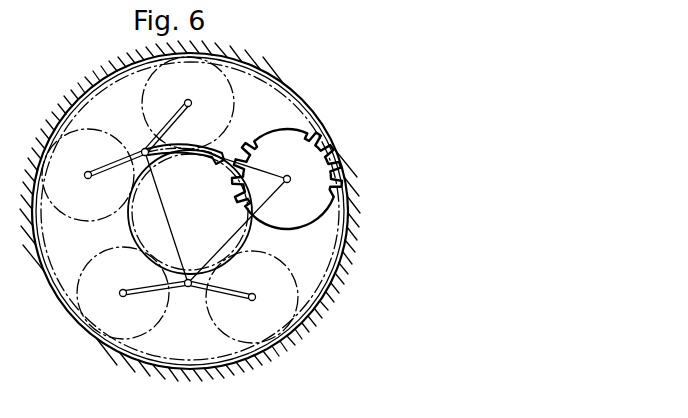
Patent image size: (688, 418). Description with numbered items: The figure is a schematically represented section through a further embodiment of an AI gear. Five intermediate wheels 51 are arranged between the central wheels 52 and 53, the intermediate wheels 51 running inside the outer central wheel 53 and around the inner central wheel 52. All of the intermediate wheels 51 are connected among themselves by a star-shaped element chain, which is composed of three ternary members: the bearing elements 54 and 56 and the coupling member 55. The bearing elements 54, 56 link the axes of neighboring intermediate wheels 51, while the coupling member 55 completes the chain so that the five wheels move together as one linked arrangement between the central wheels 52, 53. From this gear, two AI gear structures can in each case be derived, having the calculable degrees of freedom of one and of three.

The intermediate wheels 51 is at (243, 124).
The central wheel 52 is at (130, 228).
The central wheel 53 is at (338, 278).
The bearing element 54 is at (186, 296).
The coupling member 55 is at (199, 164).
The bearing element 56 is at (141, 139).